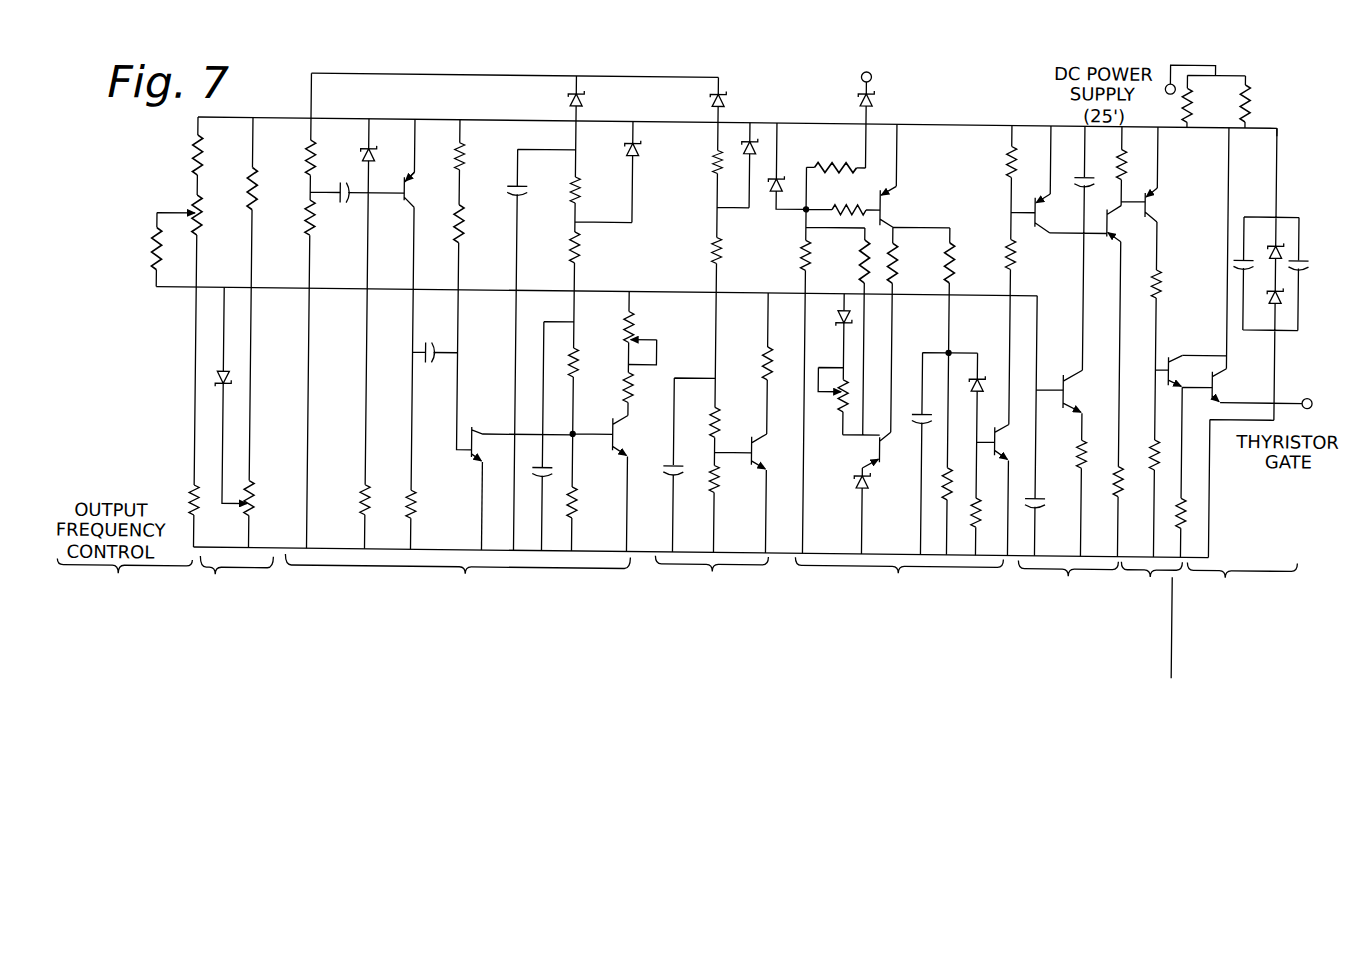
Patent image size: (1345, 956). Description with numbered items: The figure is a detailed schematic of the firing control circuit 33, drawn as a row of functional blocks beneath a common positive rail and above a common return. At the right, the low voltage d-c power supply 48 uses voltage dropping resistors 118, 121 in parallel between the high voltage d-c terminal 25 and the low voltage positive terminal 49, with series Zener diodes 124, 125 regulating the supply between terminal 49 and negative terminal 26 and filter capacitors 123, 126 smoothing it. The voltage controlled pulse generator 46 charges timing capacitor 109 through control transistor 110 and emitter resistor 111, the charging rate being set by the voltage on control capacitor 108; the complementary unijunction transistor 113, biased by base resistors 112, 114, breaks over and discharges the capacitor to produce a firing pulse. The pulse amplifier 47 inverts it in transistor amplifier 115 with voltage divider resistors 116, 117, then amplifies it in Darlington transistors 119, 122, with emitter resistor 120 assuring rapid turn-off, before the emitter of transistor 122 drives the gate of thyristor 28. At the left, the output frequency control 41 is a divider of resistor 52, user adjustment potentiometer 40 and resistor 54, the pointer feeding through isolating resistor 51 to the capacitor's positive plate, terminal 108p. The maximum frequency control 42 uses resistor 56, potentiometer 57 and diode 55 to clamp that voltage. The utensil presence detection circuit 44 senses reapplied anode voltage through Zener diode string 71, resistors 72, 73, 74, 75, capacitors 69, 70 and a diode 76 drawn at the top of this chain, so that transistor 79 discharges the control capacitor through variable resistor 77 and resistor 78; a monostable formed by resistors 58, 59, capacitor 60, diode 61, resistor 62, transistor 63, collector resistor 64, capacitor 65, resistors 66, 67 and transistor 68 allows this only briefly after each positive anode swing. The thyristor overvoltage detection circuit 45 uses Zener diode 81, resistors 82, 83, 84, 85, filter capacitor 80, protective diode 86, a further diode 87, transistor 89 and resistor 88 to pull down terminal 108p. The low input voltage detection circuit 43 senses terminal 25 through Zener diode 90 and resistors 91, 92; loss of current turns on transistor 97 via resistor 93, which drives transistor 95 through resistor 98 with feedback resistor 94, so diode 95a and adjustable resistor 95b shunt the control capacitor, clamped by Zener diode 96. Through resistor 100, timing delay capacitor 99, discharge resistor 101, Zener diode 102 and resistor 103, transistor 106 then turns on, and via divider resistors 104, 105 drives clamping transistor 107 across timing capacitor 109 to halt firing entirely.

The high voltage positive d-c supply terminal 25 is at (875, 70).
The negative terminal 26 is at (1205, 547).
The thyristor 28 is at (578, 73).
The firing control circuit 33 is at (309, 109).
The user adjustment potentiometer 40 is at (200, 213).
The output frequency control 41 is at (124, 581).
The maximum frequency control circuit 42 is at (220, 610).
The low input voltage detection circuit 43 is at (898, 630).
The utensil presence detection circuit 44 is at (457, 621).
The thyristor overvoltage detection circuit 45 is at (706, 629).
The voltage controlled pulse generator 46 is at (1081, 623).
The pulse amplifier 47 is at (1193, 662).
The low voltage d-c power supply 48 is at (1242, 606).
The low voltage positive d-c terminal 49 is at (1270, 127).
The resistor 51 is at (158, 243).
The resistor 52 is at (198, 160).
The resistor 54 is at (196, 498).
The diode 55 is at (232, 378).
The resistor 56 is at (255, 190).
The potentiometer 57 is at (256, 497).
The resistor 58 is at (313, 160).
The resistor 59 is at (311, 218).
The capacitor 60 is at (345, 200).
The diode 61 is at (372, 153).
The resistor 62 is at (366, 500).
The first p-n-p transistor 63 is at (410, 196).
The collector resistor 64 is at (418, 498).
The capacitor 65 is at (430, 345).
The resistor 66 is at (462, 160).
The resistor 67 is at (462, 220).
The second n-p-n transistor 68 is at (473, 428).
The capacitor 69 is at (520, 195).
The low pass filter capacitor 70 is at (544, 474).
The Zener diode string 71 is at (583, 96).
The resistor 72 is at (580, 200).
The resistor 73 is at (580, 245).
The resistor 74 is at (580, 360).
The resistor 75 is at (580, 500).
The diode 76 is at (639, 146).
The variable resistor 77 is at (636, 320).
The resistor 78 is at (635, 383).
The transistor 79 is at (614, 436).
The filter capacitor 80 is at (672, 463).
The Zener diode 81 is at (722, 94).
The resistor 82 is at (714, 158).
The resistor 83 is at (714, 246).
The resistor 84 is at (714, 416).
The resistor 85 is at (714, 478).
The protective diode 86 is at (757, 142).
The diode 87 is at (777, 188).
The resistor 88 is at (768, 360).
The transistor 89 is at (755, 450).
The Zener diode 90 is at (872, 95).
The resistor 91 is at (830, 160).
The resistor 92 is at (805, 248).
The resistor 93 is at (858, 200).
The resistor 94 is at (864, 258).
The transistor 95 is at (880, 435).
The diode 95a is at (844, 312).
The adjustable resistor 95b is at (845, 393).
The Zener diode 96 is at (864, 480).
The transistor 97 is at (898, 200).
The resistor 98 is at (896, 258).
The timing delay capacitor 99 is at (923, 405).
The resistor 100 is at (953, 256).
The capacitor discharge resistor 101 is at (950, 470).
The Zener diode 102 is at (981, 370).
The resistor 103 is at (978, 505).
The resistor 104 is at (1010, 162).
The resistor 105 is at (1010, 248).
The transistor 106 is at (999, 432).
The clamping transistor 107 is at (1040, 220).
The control capacitor 108 is at (1042, 500).
The terminal 108p is at (200, 287).
The timing capacitor 109 is at (1082, 168).
The control transistor 110 is at (1064, 370).
The emitter resistor 111 is at (1080, 445).
The base resistor 112 is at (1118, 155).
The complementary unijunction transistor 113 is at (1108, 228).
The base resistor 114 is at (1118, 480).
The p-n-p transistor amplifier 115 is at (1150, 194).
The voltage divider resistor 116 is at (1162, 272).
The voltage divider resistor 117 is at (1156, 444).
The voltage dropping resistor 118 is at (1191, 108).
The transistor 119 is at (1170, 352).
The emitter resistor 120 is at (1190, 505).
The voltage dropping resistor 121 is at (1250, 108).
The transistor 122 is at (1217, 378).
The filter capacitor 123 is at (1243, 258).
The Zener diode 124 is at (1280, 235).
The Zener diode 125 is at (1282, 292).
The filter capacitor 126 is at (1304, 252).